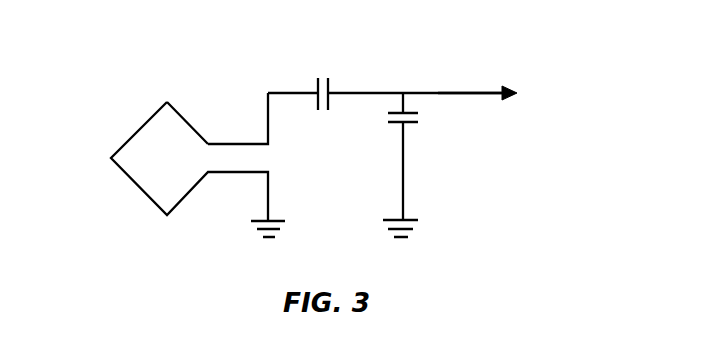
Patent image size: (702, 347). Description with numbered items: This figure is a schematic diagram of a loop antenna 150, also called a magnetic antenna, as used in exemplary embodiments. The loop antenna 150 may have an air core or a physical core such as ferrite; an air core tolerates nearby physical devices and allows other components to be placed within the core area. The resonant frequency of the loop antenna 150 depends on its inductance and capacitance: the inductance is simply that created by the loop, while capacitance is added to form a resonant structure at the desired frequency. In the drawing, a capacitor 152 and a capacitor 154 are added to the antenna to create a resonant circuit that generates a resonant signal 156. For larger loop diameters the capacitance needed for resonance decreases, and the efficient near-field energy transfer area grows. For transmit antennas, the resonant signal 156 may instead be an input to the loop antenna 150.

The loop antenna 150 is at (138, 130).
The capacitor 152 is at (328, 83).
The capacitor 154 is at (412, 125).
The resonant signal 156 is at (438, 93).